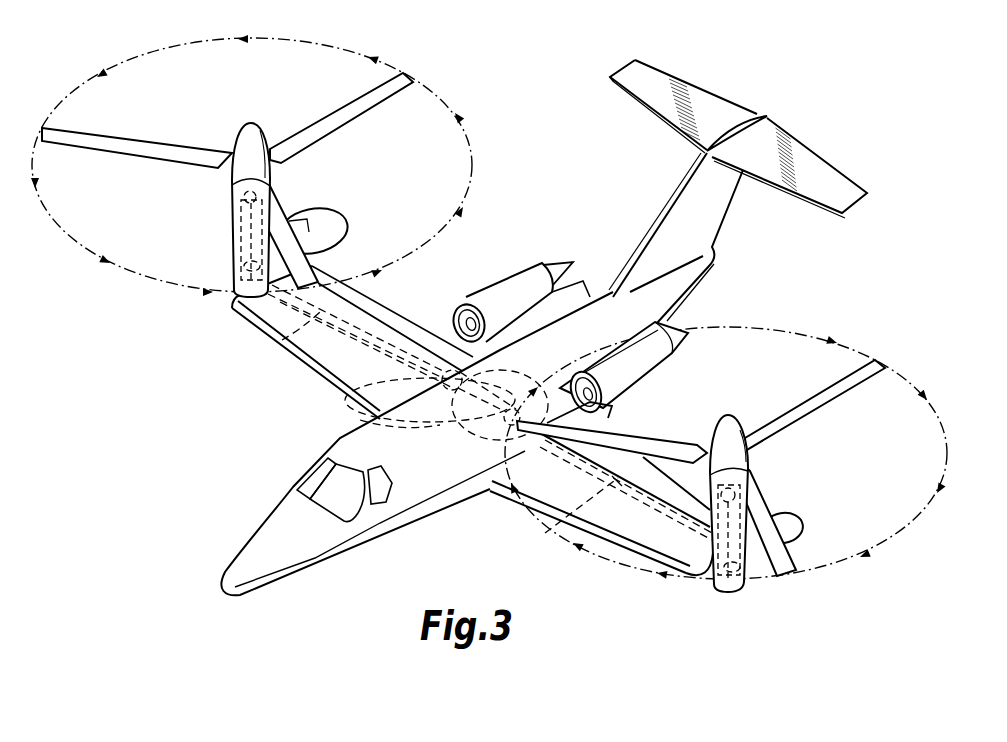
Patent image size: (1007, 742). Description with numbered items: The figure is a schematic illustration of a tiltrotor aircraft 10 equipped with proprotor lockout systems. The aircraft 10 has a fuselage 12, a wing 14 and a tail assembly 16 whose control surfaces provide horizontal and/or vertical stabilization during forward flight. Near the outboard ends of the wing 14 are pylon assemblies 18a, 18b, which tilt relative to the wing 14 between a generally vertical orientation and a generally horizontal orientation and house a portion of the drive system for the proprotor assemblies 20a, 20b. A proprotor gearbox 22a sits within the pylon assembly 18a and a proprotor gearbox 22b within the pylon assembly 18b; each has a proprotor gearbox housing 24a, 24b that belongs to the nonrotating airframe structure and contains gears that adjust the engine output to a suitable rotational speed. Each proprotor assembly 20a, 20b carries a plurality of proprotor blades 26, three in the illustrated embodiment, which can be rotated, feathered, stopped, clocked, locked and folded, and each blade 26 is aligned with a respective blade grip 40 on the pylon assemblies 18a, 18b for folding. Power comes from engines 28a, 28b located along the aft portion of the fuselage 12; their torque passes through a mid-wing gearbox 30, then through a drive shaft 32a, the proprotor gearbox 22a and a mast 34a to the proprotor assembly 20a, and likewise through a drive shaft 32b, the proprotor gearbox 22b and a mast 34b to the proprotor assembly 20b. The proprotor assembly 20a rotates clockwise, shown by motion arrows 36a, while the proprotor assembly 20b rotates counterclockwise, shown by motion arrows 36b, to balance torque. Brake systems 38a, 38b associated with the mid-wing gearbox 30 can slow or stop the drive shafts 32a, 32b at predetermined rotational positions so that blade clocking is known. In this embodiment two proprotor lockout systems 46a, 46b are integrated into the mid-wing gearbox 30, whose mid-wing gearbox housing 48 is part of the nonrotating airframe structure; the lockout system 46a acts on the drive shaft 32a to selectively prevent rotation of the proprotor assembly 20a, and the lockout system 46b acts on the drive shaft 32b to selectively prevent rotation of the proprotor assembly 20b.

The tiltrotor aircraft 10 is at (834, 122).
The fuselage 12 is at (320, 553).
The wing 14 is at (326, 347).
The tail assembly 16 is at (713, 107).
The pylon assembly 18a is at (713, 586).
The pylon assembly 18b is at (232, 215).
The proprotor assembly 20a is at (814, 422).
The proprotor assembly 20b is at (336, 141).
The proprotor gearbox 22a is at (760, 574).
The proprotor gearbox 22b is at (242, 249).
The proprotor gearbox housing 24a is at (738, 594).
The proprotor gearbox housing 24b is at (244, 267).
The proprotor blade 26 is at (334, 117).
The engine 28a is at (642, 371).
The engine 28b is at (522, 287).
The mid-wing gearbox 30 is at (442, 428).
The drive shaft 32a is at (545, 533).
The drive shaft 32b is at (282, 339).
The mast 34a is at (743, 485).
The mast 34b is at (244, 197).
The motion arrows 36a is at (760, 331).
The motion arrows 36b is at (471, 134).
The brake system 38a is at (620, 408).
The brake system 38b is at (356, 384).
The blade grip 40 is at (302, 217).
The proprotor lockout system 46a is at (498, 441).
The proprotor lockout system 46b is at (358, 420).
The mid-wing gearbox housing 48 is at (498, 370).